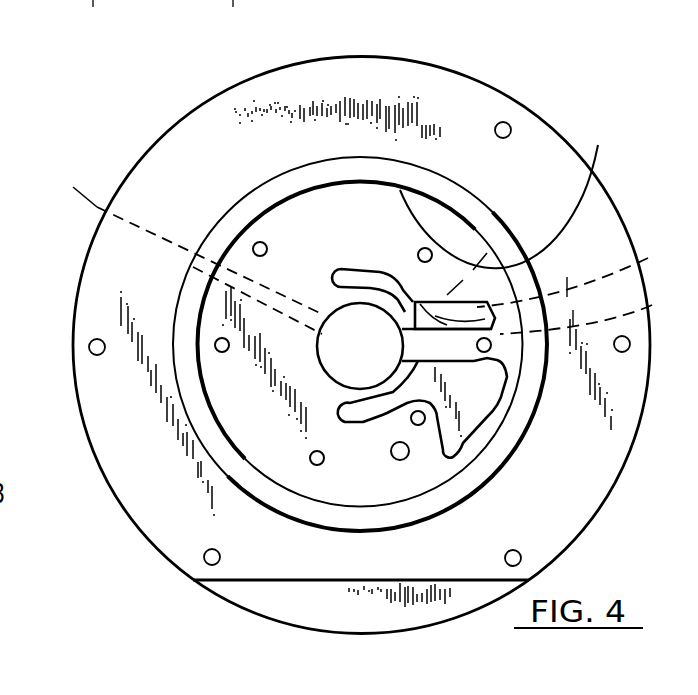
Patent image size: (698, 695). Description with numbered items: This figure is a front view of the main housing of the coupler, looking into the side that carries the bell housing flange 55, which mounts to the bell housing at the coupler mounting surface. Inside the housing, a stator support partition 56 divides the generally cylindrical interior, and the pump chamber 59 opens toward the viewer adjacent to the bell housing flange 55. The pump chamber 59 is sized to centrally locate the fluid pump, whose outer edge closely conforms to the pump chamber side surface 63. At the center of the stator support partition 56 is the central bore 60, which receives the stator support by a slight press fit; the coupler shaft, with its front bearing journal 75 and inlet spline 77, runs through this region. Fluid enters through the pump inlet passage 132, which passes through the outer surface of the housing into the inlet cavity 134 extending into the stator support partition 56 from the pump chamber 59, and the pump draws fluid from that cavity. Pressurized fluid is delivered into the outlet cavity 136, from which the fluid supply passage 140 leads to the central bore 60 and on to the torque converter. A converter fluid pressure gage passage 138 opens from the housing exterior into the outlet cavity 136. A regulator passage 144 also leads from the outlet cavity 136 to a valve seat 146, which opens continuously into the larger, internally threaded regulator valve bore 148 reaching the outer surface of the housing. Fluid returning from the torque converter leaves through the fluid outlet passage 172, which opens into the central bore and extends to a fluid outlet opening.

The bell housing flange 55 is at (187, 155).
The stator support partition 56 is at (280, 457).
The pump chamber 59 is at (244, 427).
The central bore 60 is at (320, 357).
The pump chamber side surface 63 is at (509, 192).
The front bearing journal 75 is at (99, 15).
The inlet spline 77 is at (236, 15).
The pump inlet passage 132 is at (507, 427).
The inlet cavity 134 is at (472, 381).
The outlet cavity 136 is at (370, 278).
The converter fluid pressure gage passage 138 is at (507, 232).
The fluid supply passage 140 is at (599, 310).
The regulator passage 144 is at (548, 262).
The valve seat 146 is at (497, 305).
The regulator valve bore 148 is at (584, 271).
The fluid outlet passage 172 is at (194, 242).